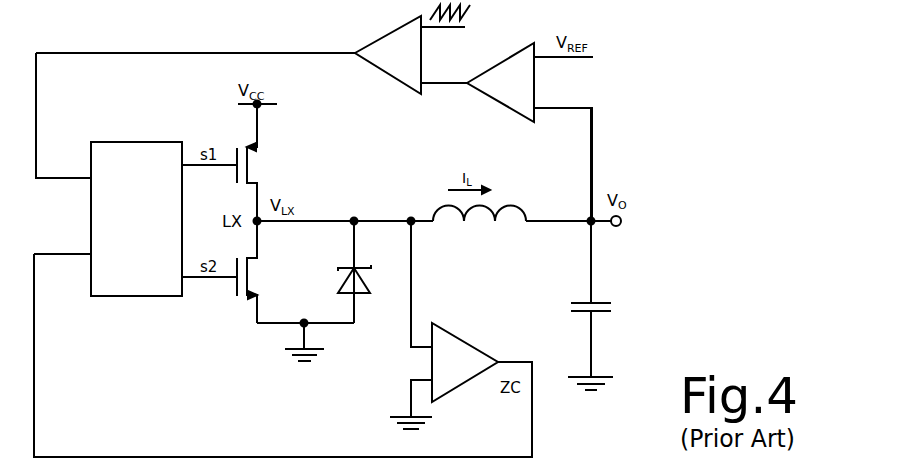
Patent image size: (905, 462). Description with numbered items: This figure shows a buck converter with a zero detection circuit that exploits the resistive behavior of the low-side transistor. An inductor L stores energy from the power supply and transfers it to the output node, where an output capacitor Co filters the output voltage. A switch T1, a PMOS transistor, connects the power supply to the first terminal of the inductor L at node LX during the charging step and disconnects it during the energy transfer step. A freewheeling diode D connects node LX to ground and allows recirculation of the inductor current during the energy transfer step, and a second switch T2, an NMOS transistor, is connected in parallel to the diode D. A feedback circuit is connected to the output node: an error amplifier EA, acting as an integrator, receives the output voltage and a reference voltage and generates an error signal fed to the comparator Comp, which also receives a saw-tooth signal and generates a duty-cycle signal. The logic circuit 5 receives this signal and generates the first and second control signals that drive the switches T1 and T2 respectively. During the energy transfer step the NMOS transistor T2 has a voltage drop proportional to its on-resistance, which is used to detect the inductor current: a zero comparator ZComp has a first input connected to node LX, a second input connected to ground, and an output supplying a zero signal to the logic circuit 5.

The logic circuit 5 is at (130, 157).
The switch T1 is at (251, 167).
The second switch T2 is at (250, 261).
The freewheeling diode D is at (366, 304).
The inductor L is at (479, 226).
The output capacitor Co is at (606, 346).
The first comparator Comp is at (385, 68).
The error amplifier EA is at (500, 98).
The zero comparator ZComp is at (462, 353).